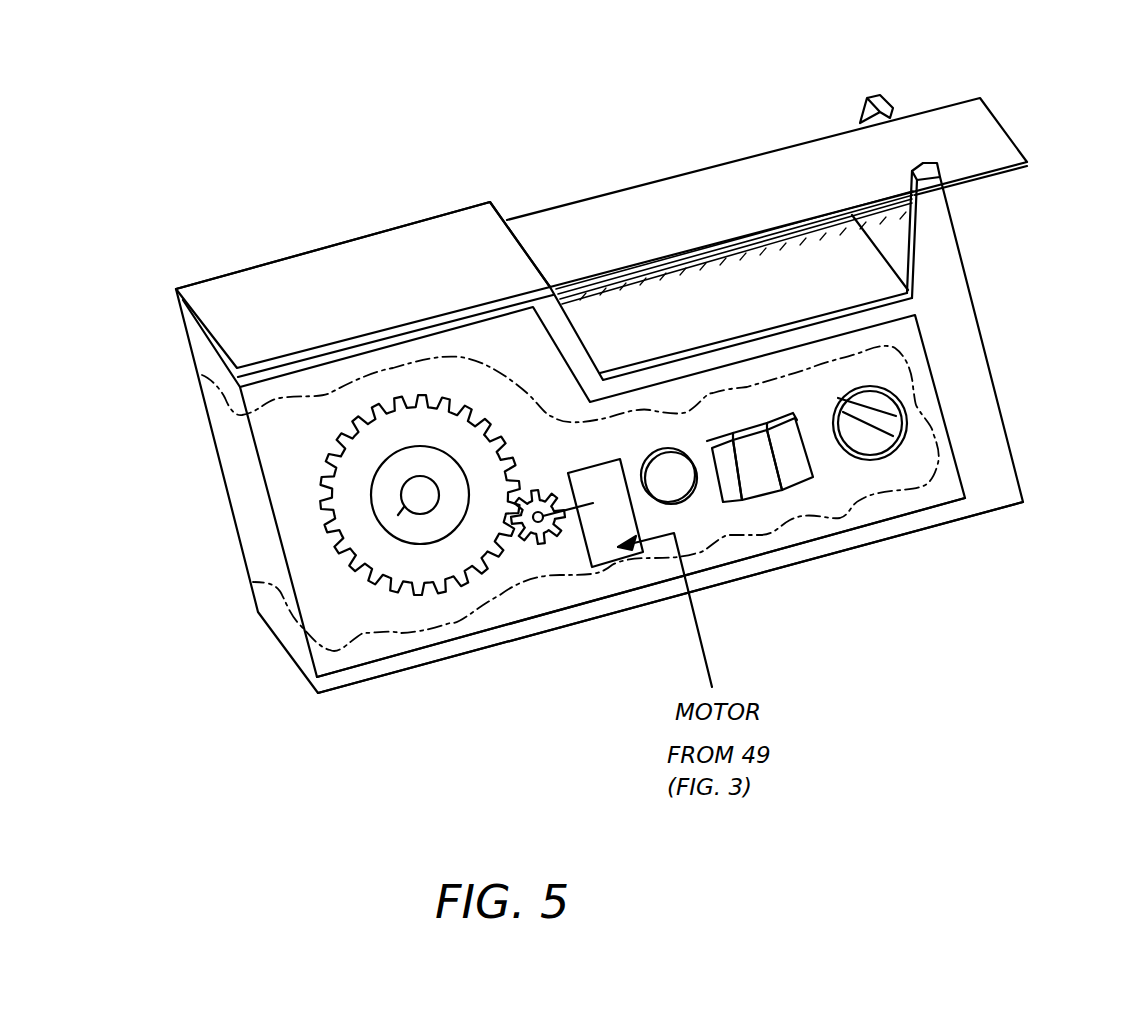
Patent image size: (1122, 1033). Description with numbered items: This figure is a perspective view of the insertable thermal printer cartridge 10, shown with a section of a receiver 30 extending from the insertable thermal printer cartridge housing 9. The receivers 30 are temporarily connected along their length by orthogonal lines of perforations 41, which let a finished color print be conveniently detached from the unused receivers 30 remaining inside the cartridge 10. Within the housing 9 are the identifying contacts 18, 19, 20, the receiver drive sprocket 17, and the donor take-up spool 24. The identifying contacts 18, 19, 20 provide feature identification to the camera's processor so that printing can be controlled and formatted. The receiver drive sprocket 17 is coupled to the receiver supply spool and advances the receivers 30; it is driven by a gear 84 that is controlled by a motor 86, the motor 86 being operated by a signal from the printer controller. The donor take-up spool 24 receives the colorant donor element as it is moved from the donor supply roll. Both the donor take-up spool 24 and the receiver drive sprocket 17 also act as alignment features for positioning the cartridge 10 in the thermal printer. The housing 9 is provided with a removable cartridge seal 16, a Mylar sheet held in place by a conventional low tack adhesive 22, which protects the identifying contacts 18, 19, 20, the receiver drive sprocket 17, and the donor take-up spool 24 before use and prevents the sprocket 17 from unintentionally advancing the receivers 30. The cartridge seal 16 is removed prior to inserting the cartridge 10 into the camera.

The insertable thermal printer cartridge housing 9 is at (400, 227).
The insertable thermal printer cartridge 10 is at (988, 698).
The cartridge seal 16 is at (517, 622).
The receiver drive sprocket 17 is at (427, 588).
The identifying contact 18 is at (733, 502).
The identifying contact 19 is at (767, 492).
The identifying contact 20 is at (793, 482).
The low tack adhesive 22 is at (360, 382).
The donor take-up spool 24 is at (877, 460).
The receiver 30 is at (770, 157).
The lines of perforations 41 is at (733, 227).
The gear 84 is at (540, 542).
The motor 86 is at (612, 562).